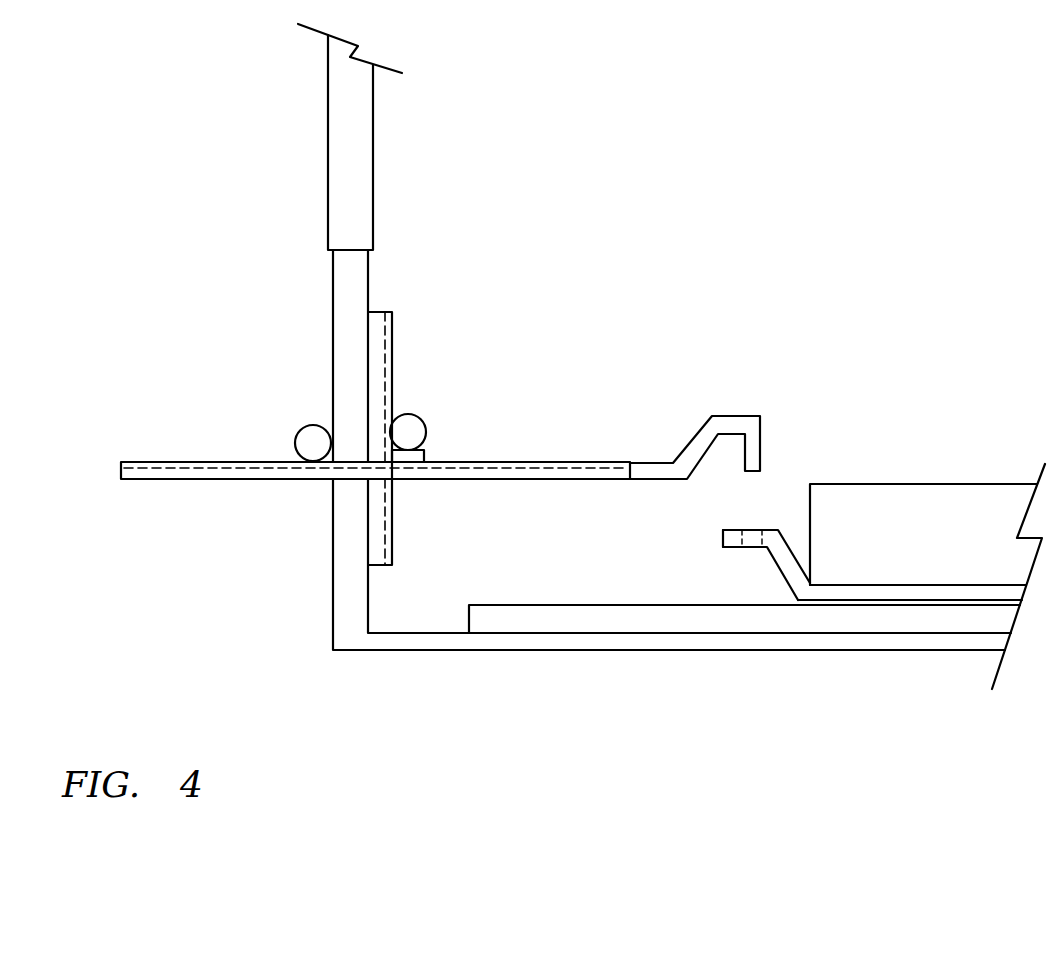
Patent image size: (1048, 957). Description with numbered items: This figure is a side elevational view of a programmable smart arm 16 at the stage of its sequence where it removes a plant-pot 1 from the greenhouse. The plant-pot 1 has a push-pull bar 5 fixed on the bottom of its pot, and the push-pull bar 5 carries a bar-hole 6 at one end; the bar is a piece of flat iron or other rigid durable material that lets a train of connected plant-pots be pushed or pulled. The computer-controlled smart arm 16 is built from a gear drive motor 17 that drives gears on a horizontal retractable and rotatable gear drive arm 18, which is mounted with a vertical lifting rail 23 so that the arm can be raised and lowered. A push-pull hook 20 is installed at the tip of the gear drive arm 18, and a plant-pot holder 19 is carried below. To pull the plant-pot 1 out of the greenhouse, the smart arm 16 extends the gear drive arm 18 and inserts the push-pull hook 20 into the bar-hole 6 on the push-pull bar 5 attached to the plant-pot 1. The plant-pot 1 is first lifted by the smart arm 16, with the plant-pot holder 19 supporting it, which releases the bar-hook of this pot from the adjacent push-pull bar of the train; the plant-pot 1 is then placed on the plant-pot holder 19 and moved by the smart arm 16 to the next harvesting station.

The plant-pot 1 is at (915, 483).
The push-pull bar 5 is at (870, 592).
The bar-hole 6 is at (750, 527).
The smart-arm 16 is at (368, 283).
The gear drive motor 17 is at (300, 431).
The gear drive arm 18 is at (472, 461).
The plant-pot holder 19 is at (543, 605).
The push-pull hook 20 is at (727, 416).
The vertical lifting rail 23 is at (392, 395).